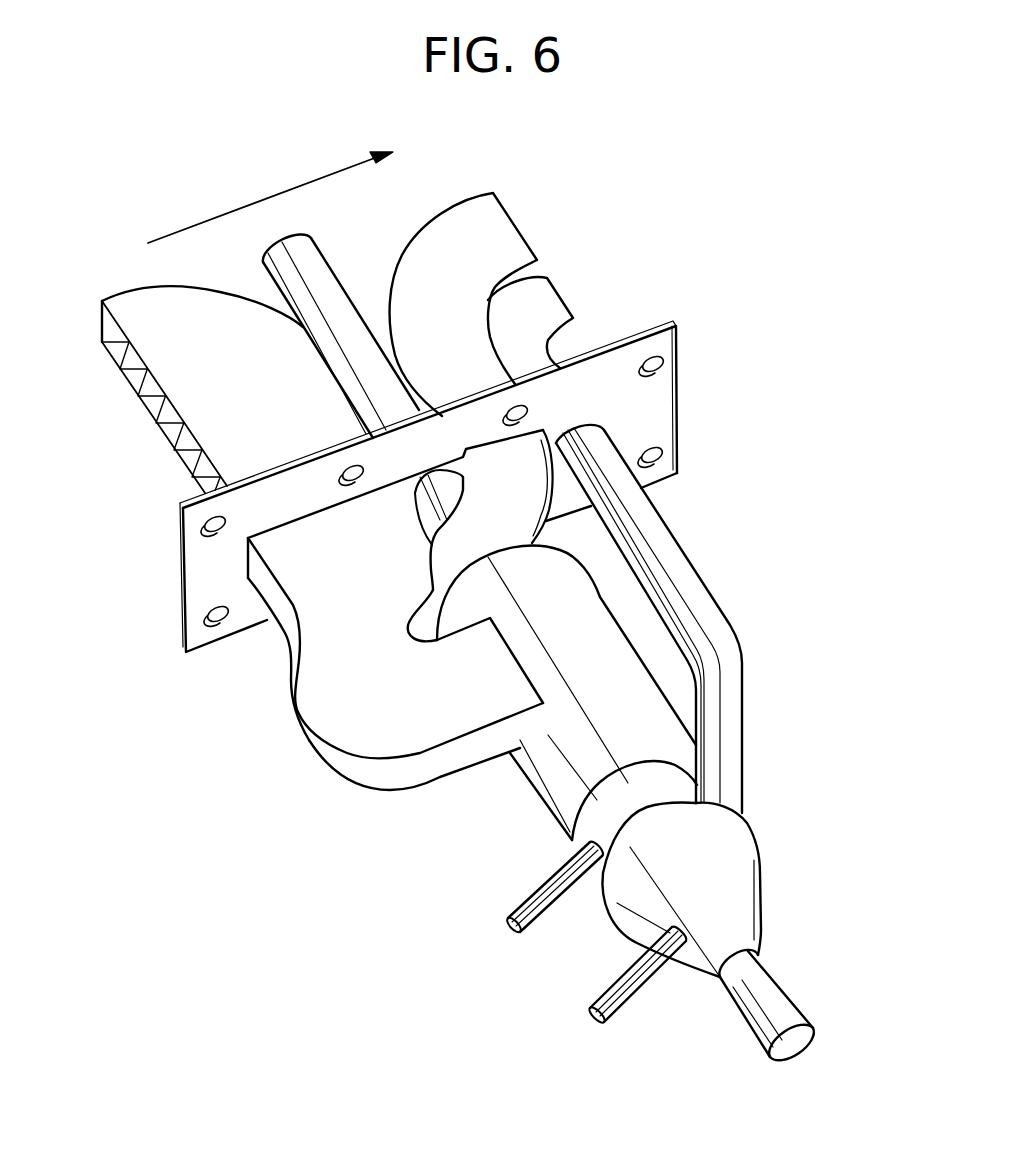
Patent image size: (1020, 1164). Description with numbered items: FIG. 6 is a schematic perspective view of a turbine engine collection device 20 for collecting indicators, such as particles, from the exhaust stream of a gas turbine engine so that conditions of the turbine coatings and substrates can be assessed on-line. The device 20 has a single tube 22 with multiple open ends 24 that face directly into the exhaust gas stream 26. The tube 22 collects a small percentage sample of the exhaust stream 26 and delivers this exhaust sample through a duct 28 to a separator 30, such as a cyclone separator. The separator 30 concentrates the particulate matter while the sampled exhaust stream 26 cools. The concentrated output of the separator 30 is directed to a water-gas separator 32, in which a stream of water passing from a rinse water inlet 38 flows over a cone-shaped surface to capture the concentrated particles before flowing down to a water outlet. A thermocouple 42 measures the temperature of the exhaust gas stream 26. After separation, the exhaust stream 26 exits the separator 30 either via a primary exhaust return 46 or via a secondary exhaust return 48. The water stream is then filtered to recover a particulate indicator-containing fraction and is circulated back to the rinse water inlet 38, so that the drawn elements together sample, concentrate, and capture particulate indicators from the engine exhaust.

The turbine engine collection device 20 is at (747, 367).
The tube 22 is at (130, 287).
The open ends 24 is at (188, 497).
The exhaust gas stream 26 is at (268, 197).
The duct 28 is at (347, 717).
The separator 30 is at (640, 657).
The water-gas separator 32 is at (767, 907).
The rinse water inlet 38 is at (507, 923).
The thermocouple 42 is at (320, 265).
The primary exhaust return 46 is at (517, 225).
The secondary exhaust return 48 is at (562, 298).